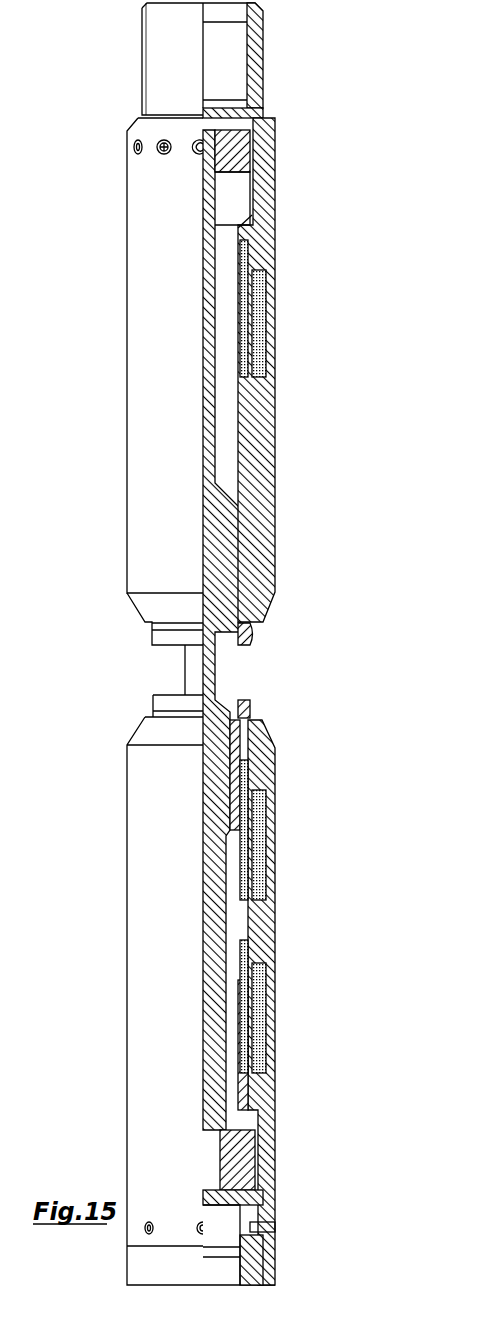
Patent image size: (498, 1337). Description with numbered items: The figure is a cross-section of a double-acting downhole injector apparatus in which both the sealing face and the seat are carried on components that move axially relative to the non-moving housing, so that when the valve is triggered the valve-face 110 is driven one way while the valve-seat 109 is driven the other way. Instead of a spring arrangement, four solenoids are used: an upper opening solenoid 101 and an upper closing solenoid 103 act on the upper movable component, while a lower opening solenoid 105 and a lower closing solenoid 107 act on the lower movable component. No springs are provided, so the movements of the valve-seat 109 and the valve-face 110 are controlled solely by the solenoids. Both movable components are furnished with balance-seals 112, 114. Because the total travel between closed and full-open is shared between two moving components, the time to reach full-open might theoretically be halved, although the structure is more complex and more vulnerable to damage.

The upper opening solenoid 101 is at (120, 434).
The upper closing solenoid 103 is at (262, 323).
The lower opening solenoid 105 is at (262, 848).
The lower closing solenoid 107 is at (262, 1028).
The valve-seat 109 is at (242, 697).
The valve-face 110 is at (245, 647).
The balance-seal 112 is at (248, 232).
The balance-seal 114 is at (245, 1110).